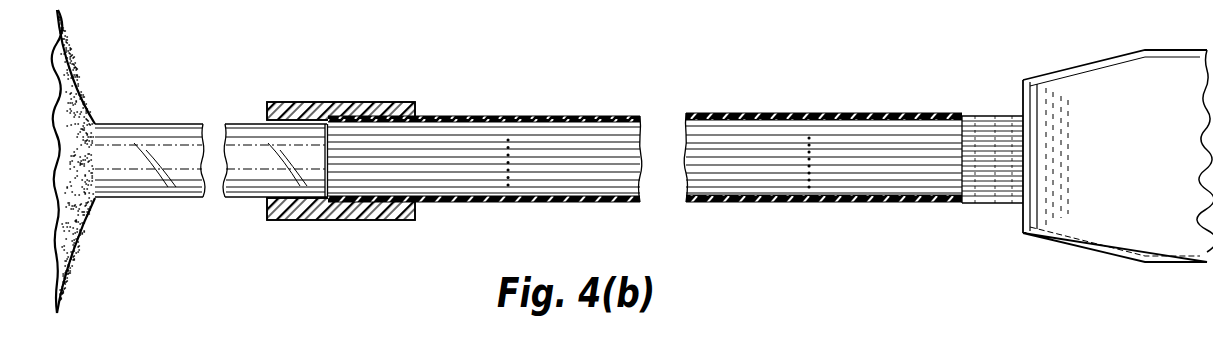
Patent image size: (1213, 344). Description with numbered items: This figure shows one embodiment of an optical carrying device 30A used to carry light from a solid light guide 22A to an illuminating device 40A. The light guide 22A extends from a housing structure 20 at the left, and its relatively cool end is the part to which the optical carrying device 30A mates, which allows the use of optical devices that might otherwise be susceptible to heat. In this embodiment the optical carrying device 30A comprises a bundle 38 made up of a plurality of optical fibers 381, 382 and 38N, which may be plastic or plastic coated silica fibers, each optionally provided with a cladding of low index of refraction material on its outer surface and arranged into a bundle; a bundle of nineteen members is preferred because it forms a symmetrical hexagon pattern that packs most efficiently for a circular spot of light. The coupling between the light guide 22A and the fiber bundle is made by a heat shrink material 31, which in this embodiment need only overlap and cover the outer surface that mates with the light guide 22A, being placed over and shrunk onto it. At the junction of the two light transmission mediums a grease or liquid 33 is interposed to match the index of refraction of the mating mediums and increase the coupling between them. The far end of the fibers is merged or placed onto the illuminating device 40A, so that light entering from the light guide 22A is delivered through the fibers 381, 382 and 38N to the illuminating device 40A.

The light source housing wall 20 is at (112, 61).
The light guide 22A is at (240, 124).
The heat shrink material 31 is at (366, 101).
The grease or liquid 33 is at (327, 183).
The optical fiber bundle 38 is at (583, 112).
The optical fiber 381 is at (540, 126).
The optical fiber 382 is at (488, 135).
The optical fiber 38N is at (474, 196).
The optical carrying device 30A is at (732, 53).
The illuminating device 40A is at (1053, 80).